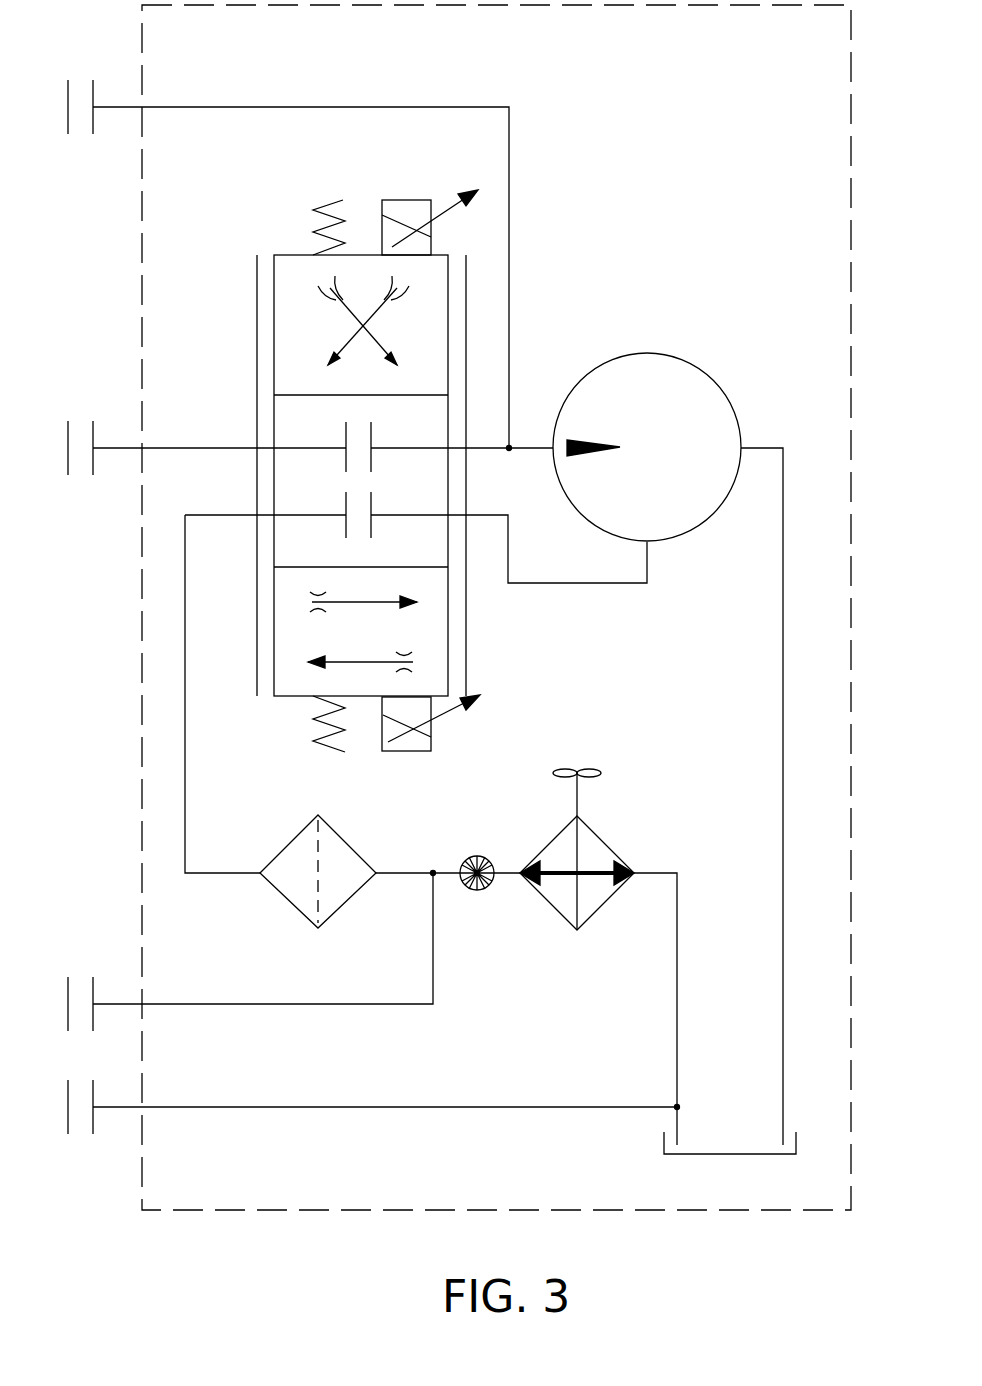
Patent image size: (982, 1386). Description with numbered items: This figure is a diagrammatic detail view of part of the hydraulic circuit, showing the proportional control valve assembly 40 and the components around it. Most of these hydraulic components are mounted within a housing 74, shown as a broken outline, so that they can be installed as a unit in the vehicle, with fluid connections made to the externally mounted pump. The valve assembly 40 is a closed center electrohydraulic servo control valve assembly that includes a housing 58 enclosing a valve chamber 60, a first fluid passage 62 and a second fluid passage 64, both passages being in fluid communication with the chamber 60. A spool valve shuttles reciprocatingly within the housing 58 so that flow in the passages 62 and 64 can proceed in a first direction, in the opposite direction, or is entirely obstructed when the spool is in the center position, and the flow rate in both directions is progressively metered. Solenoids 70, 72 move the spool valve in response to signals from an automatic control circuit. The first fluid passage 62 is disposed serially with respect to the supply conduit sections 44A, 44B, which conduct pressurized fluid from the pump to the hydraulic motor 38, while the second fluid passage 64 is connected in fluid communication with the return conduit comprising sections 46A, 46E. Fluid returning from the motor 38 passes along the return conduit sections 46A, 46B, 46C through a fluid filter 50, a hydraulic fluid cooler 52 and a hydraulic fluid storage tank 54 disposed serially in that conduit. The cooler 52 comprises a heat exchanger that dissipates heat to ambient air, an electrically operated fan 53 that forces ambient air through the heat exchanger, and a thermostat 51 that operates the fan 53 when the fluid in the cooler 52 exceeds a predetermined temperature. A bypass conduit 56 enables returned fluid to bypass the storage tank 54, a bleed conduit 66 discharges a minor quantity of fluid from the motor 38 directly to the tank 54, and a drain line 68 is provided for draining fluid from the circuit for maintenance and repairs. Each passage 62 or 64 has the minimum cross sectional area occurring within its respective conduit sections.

The hydraulic motor 38 is at (665, 353).
The proportional control valve assembly 40 is at (552, 135).
The supply conduit section 44A is at (237, 448).
The supply conduit section 44B is at (487, 448).
The return conduit section 46A is at (185, 777).
The return conduit section 46B is at (393, 870).
The return conduit section 46C is at (677, 925).
The return conduit section 46E is at (572, 583).
The fluid filter 50 is at (348, 838).
The thermostat 51 is at (470, 890).
The hydraulic fluid cooler 52 is at (600, 836).
The electrically operated fan 53 is at (583, 773).
The hydraulic fluid storage tank 54 is at (680, 1157).
The bypass conduit 56 is at (298, 1107).
The housing 58 is at (257, 277).
The valve chamber 60 is at (270, 222).
The first fluid passage 62 is at (412, 448).
The second fluid passage 64 is at (412, 515).
The bleed conduit 66 is at (783, 668).
The drain line 68 is at (275, 1003).
The solenoid 70 is at (412, 200).
The solenoid 72 is at (410, 751).
The housing 74 is at (142, 625).